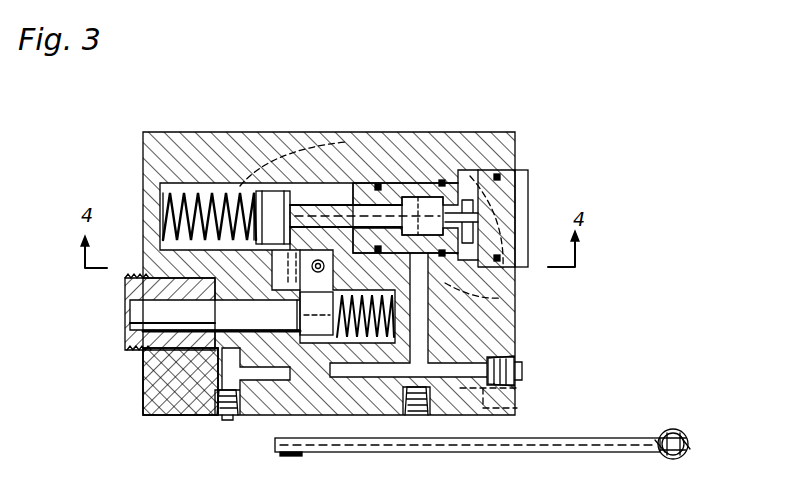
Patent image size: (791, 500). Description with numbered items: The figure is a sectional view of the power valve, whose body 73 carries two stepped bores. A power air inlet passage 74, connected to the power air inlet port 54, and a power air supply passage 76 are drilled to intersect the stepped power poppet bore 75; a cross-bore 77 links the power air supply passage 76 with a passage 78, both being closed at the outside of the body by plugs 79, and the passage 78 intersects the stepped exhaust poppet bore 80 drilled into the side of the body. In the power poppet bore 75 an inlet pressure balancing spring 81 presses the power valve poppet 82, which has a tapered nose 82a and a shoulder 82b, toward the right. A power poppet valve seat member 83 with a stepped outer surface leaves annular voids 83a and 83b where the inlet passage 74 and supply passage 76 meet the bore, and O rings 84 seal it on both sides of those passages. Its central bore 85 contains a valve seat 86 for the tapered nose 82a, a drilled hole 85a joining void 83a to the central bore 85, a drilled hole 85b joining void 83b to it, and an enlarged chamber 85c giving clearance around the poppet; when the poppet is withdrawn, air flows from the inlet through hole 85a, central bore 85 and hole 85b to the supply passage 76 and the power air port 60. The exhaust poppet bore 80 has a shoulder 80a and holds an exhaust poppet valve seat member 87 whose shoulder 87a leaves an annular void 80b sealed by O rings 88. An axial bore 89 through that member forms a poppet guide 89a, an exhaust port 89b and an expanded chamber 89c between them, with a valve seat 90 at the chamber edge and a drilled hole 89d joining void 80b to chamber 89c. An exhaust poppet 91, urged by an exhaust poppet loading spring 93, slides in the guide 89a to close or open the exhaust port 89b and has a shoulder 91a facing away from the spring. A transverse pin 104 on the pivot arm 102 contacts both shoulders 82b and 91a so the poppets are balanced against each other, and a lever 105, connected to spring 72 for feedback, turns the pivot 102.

The power air inlet port 54 is at (517, 408).
The power air port 60 is at (414, 418).
The spring 72 is at (682, 432).
The body 73 is at (513, 343).
The power air inlet passage 74 is at (490, 300).
The stepped power poppet bore 75 is at (392, 183).
The power air supply passage 76 is at (428, 340).
The cross-bore 77 is at (258, 405).
The passage 78 is at (222, 418).
The plugs 79 is at (522, 368).
The stepped exhaust poppet bore 80 is at (165, 366).
The shoulder 80a is at (208, 395).
The annular void 80b is at (210, 370).
The inlet pressure balancing spring 81 is at (248, 183).
The power valve poppet 82 is at (312, 192).
The tapered nose 82a is at (470, 190).
The shoulder 82b is at (292, 200).
The power poppet valve seat member 83 is at (505, 190).
The annular void 83a is at (510, 287).
The annular void 83b is at (417, 183).
The O rings 84 is at (500, 177).
The central bore 85 is at (480, 208).
The drilled hole 85a is at (482, 228).
The drilled hole 85b is at (438, 197).
The enlarged chamber 85c is at (397, 183).
The valve seat 86 is at (480, 175).
The exhaust poppet valve seat member 87 is at (123, 292).
The shoulder 87a is at (172, 352).
The O rings 88 is at (215, 300).
The axial bore 89 is at (170, 316).
The poppet guide 89a is at (278, 340).
The exhaust port 89b is at (150, 318).
The expanded chamber 89c is at (190, 328).
The drilled hole 89d is at (175, 340).
The valve seat 90 is at (127, 282).
The exhaust poppet 91 is at (221, 315).
The shoulder 91a is at (302, 340).
The exhaust poppet loading spring 93 is at (365, 345).
The pivot arm 102 is at (327, 272).
The transverse pin 104 is at (292, 250).
The lever 105 is at (568, 442).